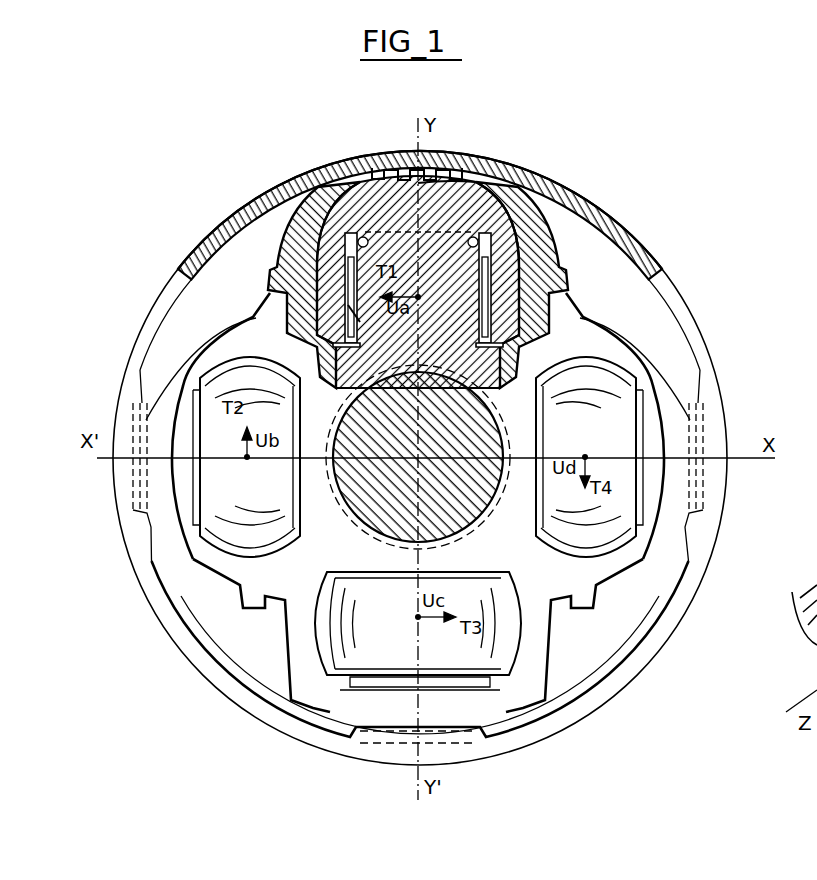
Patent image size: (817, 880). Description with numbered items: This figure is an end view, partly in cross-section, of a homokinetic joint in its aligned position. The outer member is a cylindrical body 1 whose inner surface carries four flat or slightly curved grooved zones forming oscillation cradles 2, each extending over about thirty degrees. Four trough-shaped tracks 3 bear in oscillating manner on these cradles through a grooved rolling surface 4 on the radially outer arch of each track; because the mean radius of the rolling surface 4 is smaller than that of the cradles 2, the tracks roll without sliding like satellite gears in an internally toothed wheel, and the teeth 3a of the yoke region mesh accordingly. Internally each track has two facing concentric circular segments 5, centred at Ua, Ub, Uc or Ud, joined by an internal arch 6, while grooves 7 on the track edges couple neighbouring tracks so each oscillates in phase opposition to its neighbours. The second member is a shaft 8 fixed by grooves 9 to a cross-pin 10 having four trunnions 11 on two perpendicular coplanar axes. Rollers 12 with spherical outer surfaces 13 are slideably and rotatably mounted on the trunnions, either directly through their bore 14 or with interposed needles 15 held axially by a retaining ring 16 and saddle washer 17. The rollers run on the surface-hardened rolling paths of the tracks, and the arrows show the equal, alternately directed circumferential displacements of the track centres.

The cylindrical body 1 is at (664, 259).
The oscillation cradles 2 is at (383, 162).
The trough-shaped tracks 3 is at (296, 190).
The yoke teeth 3a is at (366, 172).
The rolling surface 4 is at (303, 253).
The concentric circular segments 5 is at (510, 237).
The internal arch 6 is at (524, 166).
The grooves 7 is at (600, 262).
The shaft 8 is at (505, 490).
The grooves 9 is at (514, 443).
The cross-pin 10 is at (645, 382).
The trunnions 11 is at (342, 298).
The rollers 12 is at (205, 550).
The spherical outer surfaces 13 is at (302, 211).
The bore 14 is at (364, 320).
The needles 15 is at (604, 314).
The retaining ring 16 is at (482, 168).
The saddle washer 17 is at (330, 186).